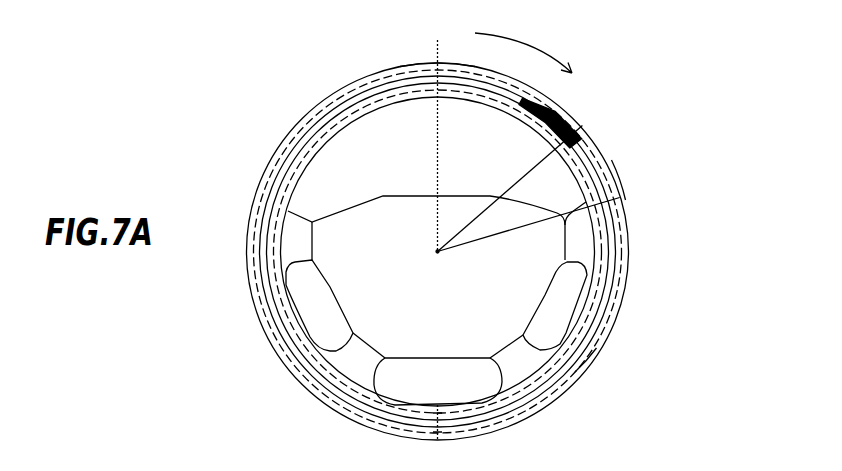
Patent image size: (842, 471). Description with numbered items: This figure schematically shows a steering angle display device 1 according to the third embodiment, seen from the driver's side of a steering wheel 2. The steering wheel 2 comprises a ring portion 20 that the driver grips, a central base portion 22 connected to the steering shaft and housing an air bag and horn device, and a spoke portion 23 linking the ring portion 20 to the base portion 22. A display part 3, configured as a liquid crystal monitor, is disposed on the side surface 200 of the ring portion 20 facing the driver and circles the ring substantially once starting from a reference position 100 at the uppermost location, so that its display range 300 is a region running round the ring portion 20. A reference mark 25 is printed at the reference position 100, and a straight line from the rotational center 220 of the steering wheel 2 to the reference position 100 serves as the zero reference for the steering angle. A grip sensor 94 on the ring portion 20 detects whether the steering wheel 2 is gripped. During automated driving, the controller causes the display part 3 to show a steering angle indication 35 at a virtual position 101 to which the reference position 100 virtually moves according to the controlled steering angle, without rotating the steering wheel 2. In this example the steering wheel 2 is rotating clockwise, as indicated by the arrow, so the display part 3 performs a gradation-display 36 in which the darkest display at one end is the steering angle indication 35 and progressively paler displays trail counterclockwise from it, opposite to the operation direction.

The steering angle display device 1 is at (740, 33).
The steering wheel 2 is at (618, 149).
The display part 3 is at (618, 245).
The ring portion 20 is at (613, 175).
The base portion 22 is at (522, 292).
The spoke portion 23 is at (358, 365).
The reference mark 25 is at (436, 63).
The steering angle indication 35 is at (580, 133).
The gradation-display 36 is at (553, 107).
The grip sensor 94 is at (598, 343).
The reference position 100 is at (437, 66).
The virtual position 101 is at (578, 125).
The side surface 200 is at (623, 273).
The rotational center 220 is at (620, 198).
The display range 300 is at (345, 106).